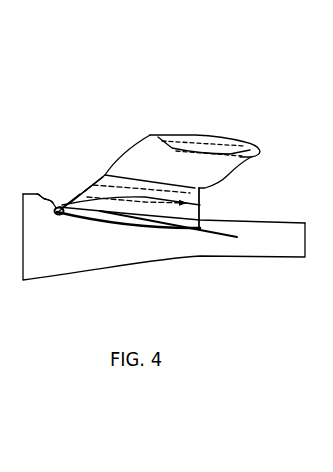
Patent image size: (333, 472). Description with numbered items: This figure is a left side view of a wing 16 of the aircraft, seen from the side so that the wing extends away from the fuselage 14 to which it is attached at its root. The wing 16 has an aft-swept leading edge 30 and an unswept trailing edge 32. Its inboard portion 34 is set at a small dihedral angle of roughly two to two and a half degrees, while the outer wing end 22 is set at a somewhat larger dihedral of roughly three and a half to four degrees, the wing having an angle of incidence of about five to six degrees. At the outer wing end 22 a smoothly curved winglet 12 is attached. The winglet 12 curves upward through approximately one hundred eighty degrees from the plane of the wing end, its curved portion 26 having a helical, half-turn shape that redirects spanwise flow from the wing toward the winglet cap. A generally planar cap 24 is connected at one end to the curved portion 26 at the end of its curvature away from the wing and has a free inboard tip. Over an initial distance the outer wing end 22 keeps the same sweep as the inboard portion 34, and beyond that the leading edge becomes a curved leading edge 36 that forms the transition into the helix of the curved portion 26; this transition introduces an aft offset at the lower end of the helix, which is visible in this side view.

The winglet 12 is at (135, 145).
The fuselage 14 is at (189, 258).
The wing 16 is at (174, 122).
The outer wing end 22 is at (85, 196).
The cap 24 is at (260, 143).
The curved portion 26 is at (230, 174).
The leading edge 30 is at (32, 197).
The trailing edge 32 is at (203, 210).
The inboard portion 34 is at (79, 194).
The curved leading edge 36 is at (92, 182).